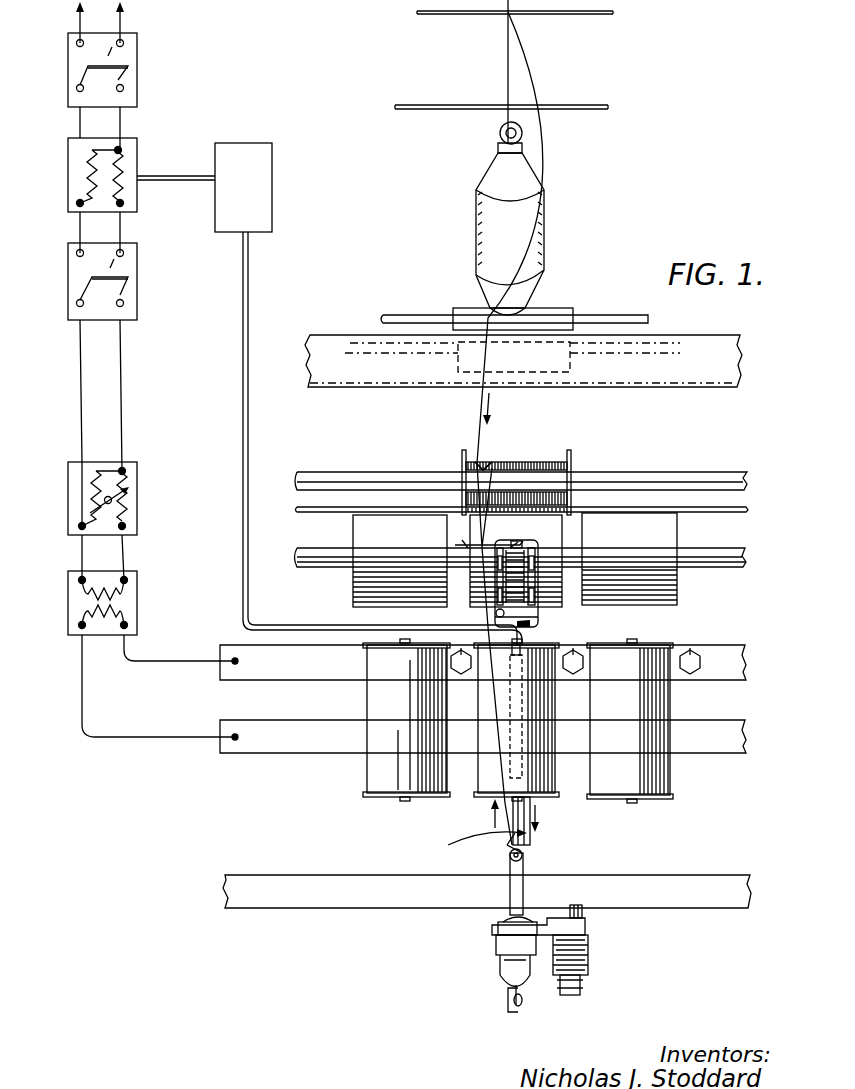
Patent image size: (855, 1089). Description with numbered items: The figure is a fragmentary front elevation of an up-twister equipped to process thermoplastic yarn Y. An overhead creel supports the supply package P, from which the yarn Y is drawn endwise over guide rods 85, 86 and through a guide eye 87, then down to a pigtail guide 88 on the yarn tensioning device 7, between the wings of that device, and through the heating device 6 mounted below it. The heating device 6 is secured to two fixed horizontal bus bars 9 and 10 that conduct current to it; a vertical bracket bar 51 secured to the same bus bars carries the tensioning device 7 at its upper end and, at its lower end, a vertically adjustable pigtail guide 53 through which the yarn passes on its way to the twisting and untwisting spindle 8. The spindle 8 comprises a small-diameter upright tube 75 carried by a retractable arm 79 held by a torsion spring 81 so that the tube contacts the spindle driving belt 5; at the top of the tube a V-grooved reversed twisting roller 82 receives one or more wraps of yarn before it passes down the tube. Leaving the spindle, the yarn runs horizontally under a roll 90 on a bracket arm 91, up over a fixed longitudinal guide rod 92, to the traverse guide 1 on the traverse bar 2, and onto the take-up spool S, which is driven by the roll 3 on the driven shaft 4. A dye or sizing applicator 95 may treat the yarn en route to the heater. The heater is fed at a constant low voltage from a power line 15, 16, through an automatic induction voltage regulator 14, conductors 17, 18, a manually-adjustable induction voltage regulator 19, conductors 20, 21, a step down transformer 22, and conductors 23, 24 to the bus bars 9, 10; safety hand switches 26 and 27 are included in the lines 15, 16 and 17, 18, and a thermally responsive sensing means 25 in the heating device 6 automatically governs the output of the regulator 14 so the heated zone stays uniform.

The guide 1 is at (490, 465).
The traverse bar 2 is at (722, 470).
The roll 3 is at (540, 597).
The driven shaft 4 is at (690, 565).
The spindle driving belt 5 is at (529, 628).
The heating device 6 is at (537, 700).
The yarn tensioning device 7 is at (521, 548).
The twisting and untwisting spindle 8 is at (500, 928).
The bus bar 9 is at (748, 663).
The bus bar 10 is at (745, 740).
The automatic induction voltage regulator 14 is at (68, 178).
The power line 15 is at (78, 24).
The power line 16 is at (123, 25).
The conductor 17 is at (82, 380).
The conductor 18 is at (124, 378).
The manually-adjustable induction voltage regulator 19 is at (135, 493).
The conductor 20 is at (82, 556).
The conductor 21 is at (125, 553).
The step down transformer 22 is at (137, 606).
The conductor 23 is at (150, 737).
The conductor 24 is at (166, 651).
The thermally responsive sensing means 25 is at (250, 347).
The safety hand switch 26 is at (125, 78).
The safety hand switch 27 is at (128, 295).
The vertical bracket bar 51 is at (522, 797).
The pigtail guide 53 is at (510, 846).
The upright tube 75 is at (524, 895).
The retractable arm 79 is at (590, 928).
The torsion spring 81 is at (585, 956).
The reversed twisting roller 82 is at (522, 855).
The guide rod 85 is at (590, 15).
The guide rod 86 is at (598, 111).
The guide eye 87 is at (500, 121).
The pigtail guide 88 is at (460, 541).
The roll 90 is at (522, 1003).
The bracket arm 91 is at (505, 1002).
The guide rod 92 is at (320, 510).
The applicator 95 is at (672, 338).
The package P is at (533, 228).
The take-up spool S is at (570, 462).
The thermoplastic yarn Y is at (478, 420).